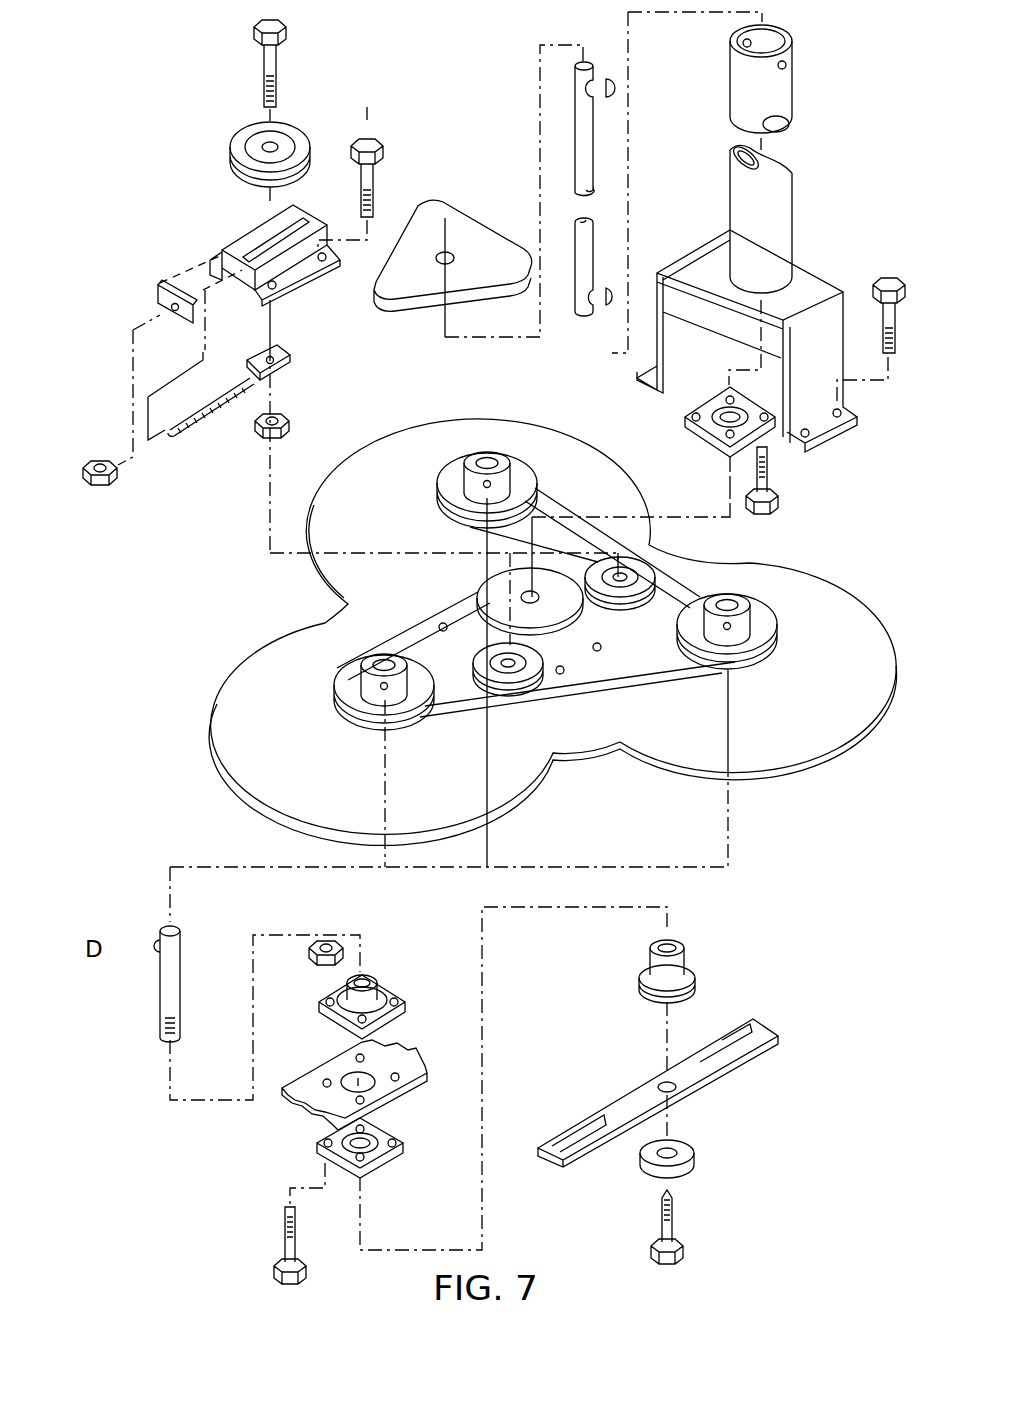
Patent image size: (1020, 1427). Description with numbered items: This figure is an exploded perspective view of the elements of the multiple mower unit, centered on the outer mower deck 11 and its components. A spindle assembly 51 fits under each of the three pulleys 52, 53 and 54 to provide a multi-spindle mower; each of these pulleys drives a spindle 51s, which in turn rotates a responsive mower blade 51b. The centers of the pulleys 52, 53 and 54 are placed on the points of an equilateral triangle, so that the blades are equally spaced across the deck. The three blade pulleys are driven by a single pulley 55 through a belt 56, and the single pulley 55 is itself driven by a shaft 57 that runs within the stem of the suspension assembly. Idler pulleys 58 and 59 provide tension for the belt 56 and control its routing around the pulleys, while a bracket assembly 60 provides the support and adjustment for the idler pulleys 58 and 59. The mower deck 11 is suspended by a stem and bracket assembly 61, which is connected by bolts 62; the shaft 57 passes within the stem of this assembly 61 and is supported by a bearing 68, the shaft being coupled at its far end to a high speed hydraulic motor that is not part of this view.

The outer mower deck 11 is at (852, 697).
The spindle assembly 51 is at (405, 1014).
The spindle 51s is at (160, 978).
The mower blade 51b is at (690, 1093).
The pulley 52 is at (372, 707).
The pulley 53 is at (520, 467).
The pulley 54 is at (762, 613).
The pulley 55 is at (572, 612).
The belt 56 is at (637, 687).
The shaft 57 is at (572, 125).
The idler pulley 58 is at (475, 656).
The idler pulley 59 is at (650, 607).
The bracket assembly 60 is at (250, 230).
The stem and bracket assembly 61 is at (780, 234).
The bolts 62 is at (878, 278).
The bearing 68 is at (706, 443).